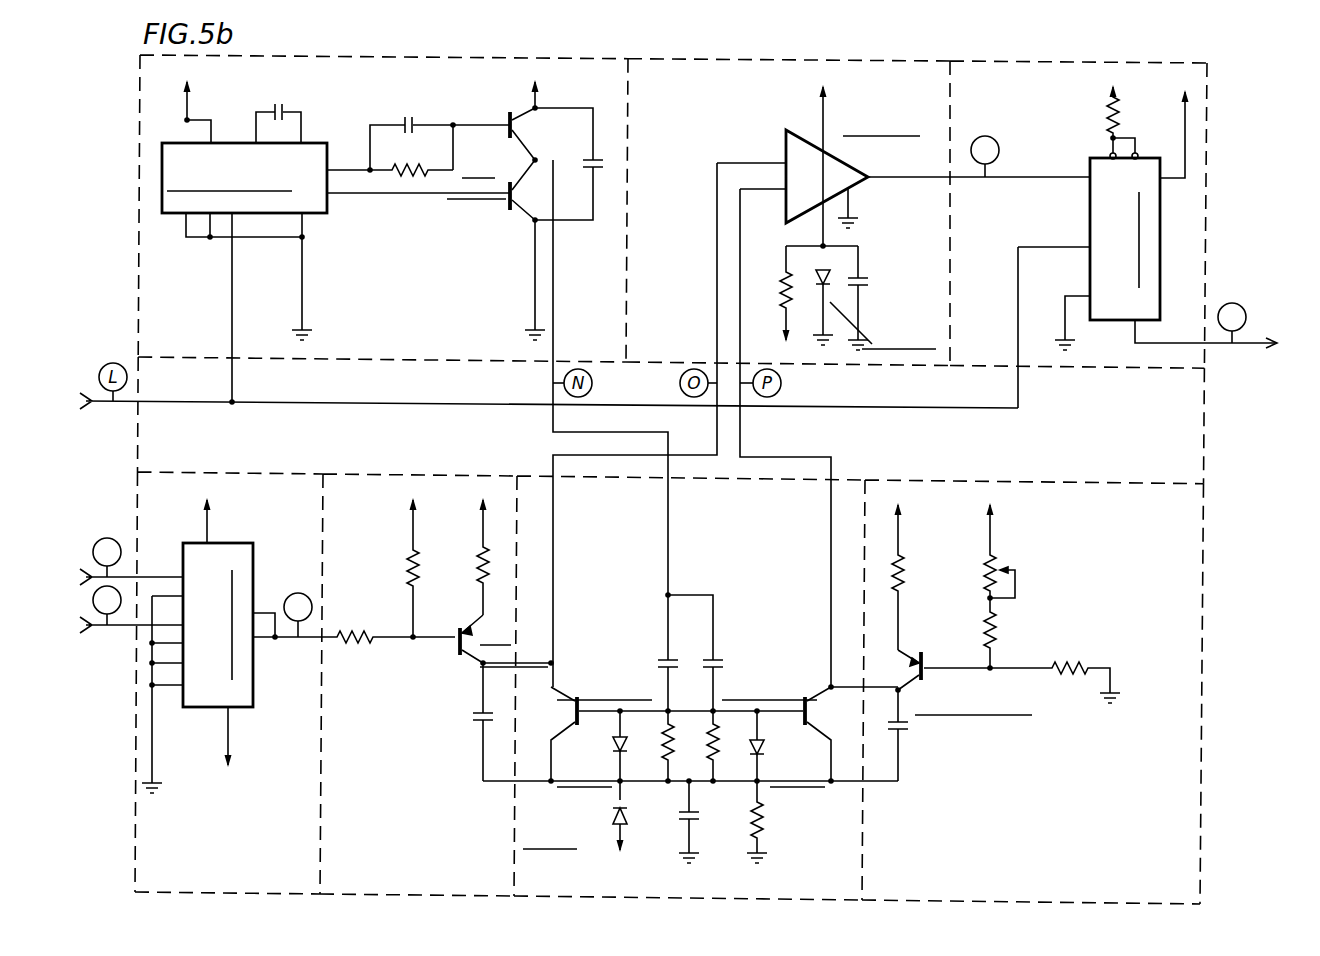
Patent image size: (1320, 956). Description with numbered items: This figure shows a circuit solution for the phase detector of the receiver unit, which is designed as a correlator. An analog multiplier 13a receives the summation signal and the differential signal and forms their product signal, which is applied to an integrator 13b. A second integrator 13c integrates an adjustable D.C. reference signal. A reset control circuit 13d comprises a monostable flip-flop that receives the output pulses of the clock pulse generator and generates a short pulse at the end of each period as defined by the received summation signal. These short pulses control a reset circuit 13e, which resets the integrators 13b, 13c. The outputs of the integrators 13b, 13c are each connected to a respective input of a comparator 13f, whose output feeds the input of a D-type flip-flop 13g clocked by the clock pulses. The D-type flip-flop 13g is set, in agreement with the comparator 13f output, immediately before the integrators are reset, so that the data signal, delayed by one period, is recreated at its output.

The analog multiplier 13a is at (281, 899).
The integrator 13b is at (461, 905).
The second integrator 13c is at (1023, 902).
The reset control circuit 13d is at (451, 372).
The reset circuit 13e is at (700, 905).
The comparator 13f is at (893, 375).
The D-type flip-flop 13g is at (1128, 370).